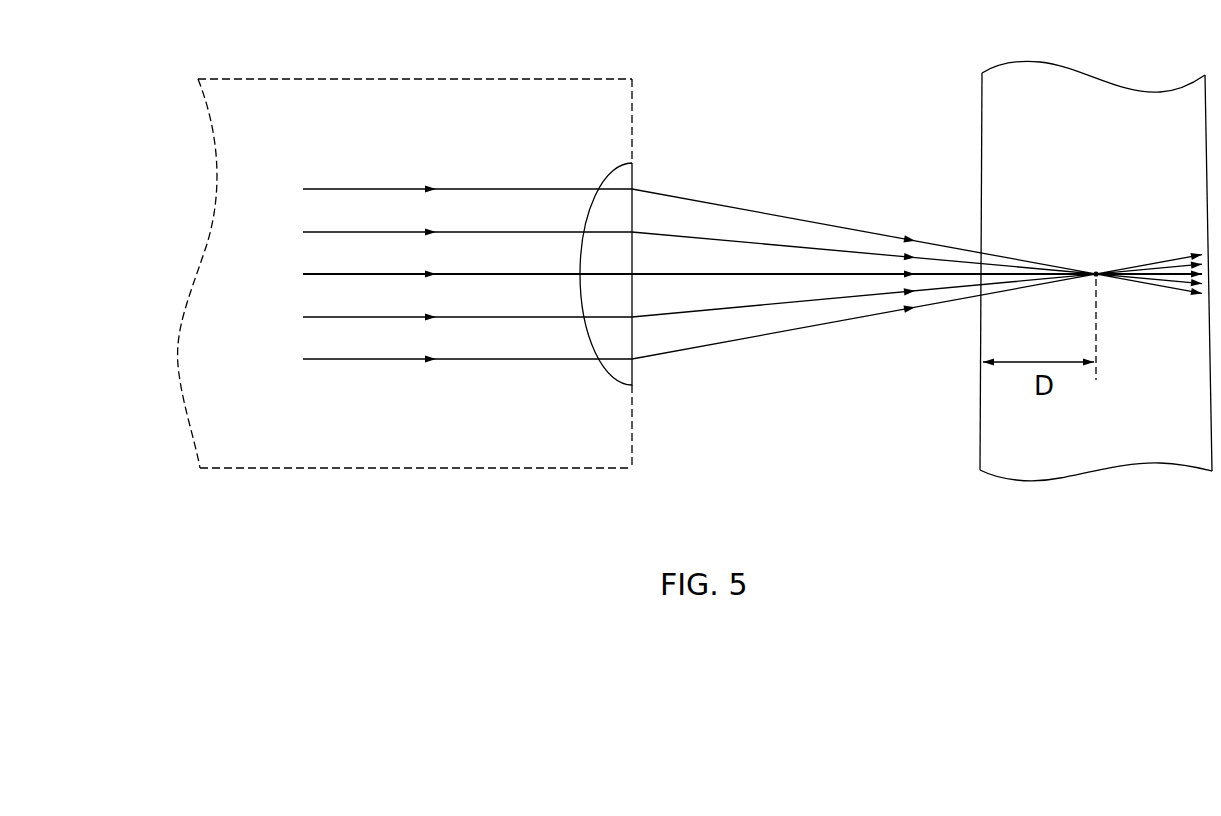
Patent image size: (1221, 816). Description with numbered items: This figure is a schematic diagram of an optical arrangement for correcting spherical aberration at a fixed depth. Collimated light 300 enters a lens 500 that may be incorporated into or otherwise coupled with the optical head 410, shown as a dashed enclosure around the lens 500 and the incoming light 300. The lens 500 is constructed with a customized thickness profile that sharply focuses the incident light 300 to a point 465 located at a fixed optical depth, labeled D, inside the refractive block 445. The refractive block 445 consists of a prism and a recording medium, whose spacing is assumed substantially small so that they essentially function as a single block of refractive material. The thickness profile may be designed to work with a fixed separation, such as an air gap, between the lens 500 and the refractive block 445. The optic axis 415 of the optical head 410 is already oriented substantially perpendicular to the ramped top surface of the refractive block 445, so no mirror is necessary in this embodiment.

The collimated light 300 is at (312, 189).
The optical head 410 is at (508, 78).
The optic axis 415 is at (752, 274).
The refractive block 445 is at (1093, 72).
The focal point 465 is at (1098, 272).
The lens 500 is at (603, 181).